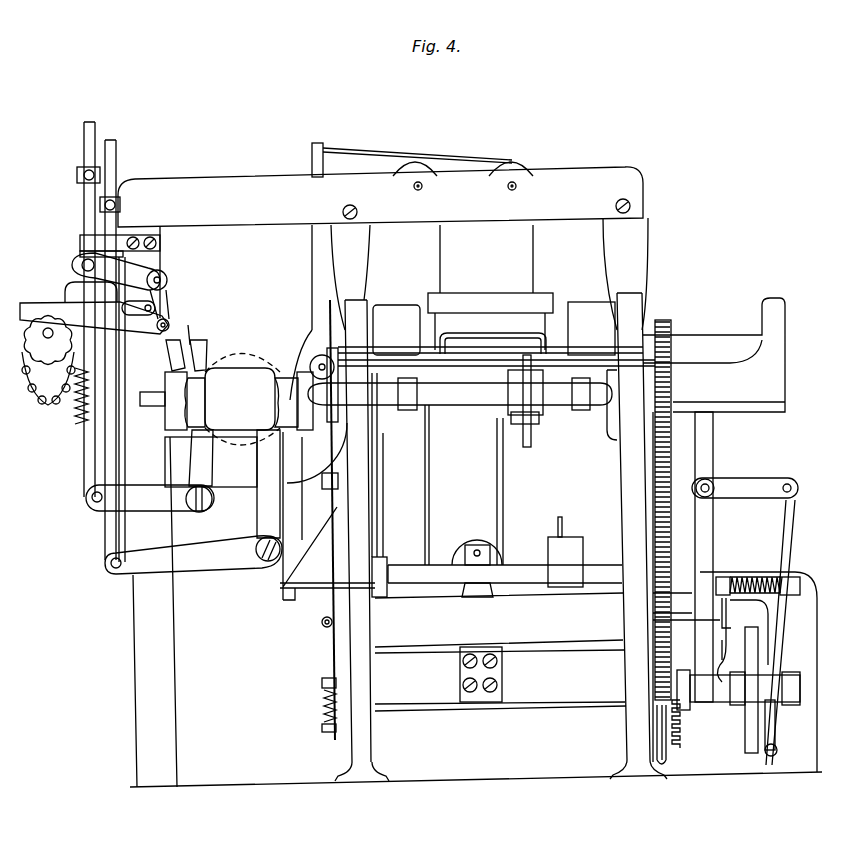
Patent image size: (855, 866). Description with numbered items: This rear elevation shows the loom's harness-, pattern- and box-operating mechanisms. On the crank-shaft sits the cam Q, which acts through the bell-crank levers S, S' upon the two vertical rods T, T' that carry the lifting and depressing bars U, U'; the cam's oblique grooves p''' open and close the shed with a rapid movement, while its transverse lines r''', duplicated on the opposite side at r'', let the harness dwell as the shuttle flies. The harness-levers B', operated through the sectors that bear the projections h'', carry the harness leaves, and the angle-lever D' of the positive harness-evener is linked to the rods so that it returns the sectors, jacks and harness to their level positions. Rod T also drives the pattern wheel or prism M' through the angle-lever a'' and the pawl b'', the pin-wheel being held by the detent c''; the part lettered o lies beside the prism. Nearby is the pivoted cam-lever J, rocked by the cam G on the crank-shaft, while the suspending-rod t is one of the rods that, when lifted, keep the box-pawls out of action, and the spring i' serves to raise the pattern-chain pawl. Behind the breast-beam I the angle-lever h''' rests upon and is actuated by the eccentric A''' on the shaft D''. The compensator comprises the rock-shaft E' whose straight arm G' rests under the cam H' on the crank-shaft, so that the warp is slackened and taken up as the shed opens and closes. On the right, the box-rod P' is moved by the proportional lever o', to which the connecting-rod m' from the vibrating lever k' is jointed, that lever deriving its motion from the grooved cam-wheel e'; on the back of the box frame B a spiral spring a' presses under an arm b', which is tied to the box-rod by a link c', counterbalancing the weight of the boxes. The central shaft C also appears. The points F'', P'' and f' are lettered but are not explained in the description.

The harness-lever B' is at (380, 170).
The vertical rod T is at (87, 297).
The vertical rod T' is at (115, 338).
The lifting and depressing bar U is at (76, 176).
The lifting and depressing bar U' is at (121, 202).
The angle-lever a'' is at (120, 286).
The detent c'' is at (94, 308).
The link c' is at (432, 491).
The pawl b'' is at (175, 319).
The projection h'' is at (199, 326).
The central shaft C is at (175, 355).
The angle-lever D' is at (200, 355).
The oblique line p''' is at (242, 401).
The cam Q is at (240, 399).
The jaw r'' is at (195, 402).
The transverse line r''' is at (287, 402).
The cam G is at (309, 362).
The handle F'' is at (490, 323).
The rock-shaft E' is at (496, 347).
The breast-beam I is at (454, 401).
The cam H' is at (525, 401).
The straight arm G' is at (532, 431).
The spring o is at (46, 396).
The pattern wheel or prism M' is at (48, 376).
The bell-crank lever S is at (150, 498).
The bell-crank lever S' is at (193, 555).
The pivoted lever J is at (335, 520).
The shaft D'' is at (492, 567).
The angle-lever h''' is at (557, 518).
The eccentric A''' is at (565, 562).
The pivot P'' is at (316, 622).
The suspending-rod t is at (321, 712).
The box-rod P' is at (712, 557).
The proportional lever o' is at (745, 488).
The connecting-rod m' is at (791, 632).
The spiral spring a' is at (758, 571).
The arm b' is at (737, 613).
The frame B is at (730, 535).
The spring i' is at (653, 734).
The ratchet f' is at (685, 724).
The cam-wheel e' is at (744, 690).
The vibrating lever k' is at (778, 728).